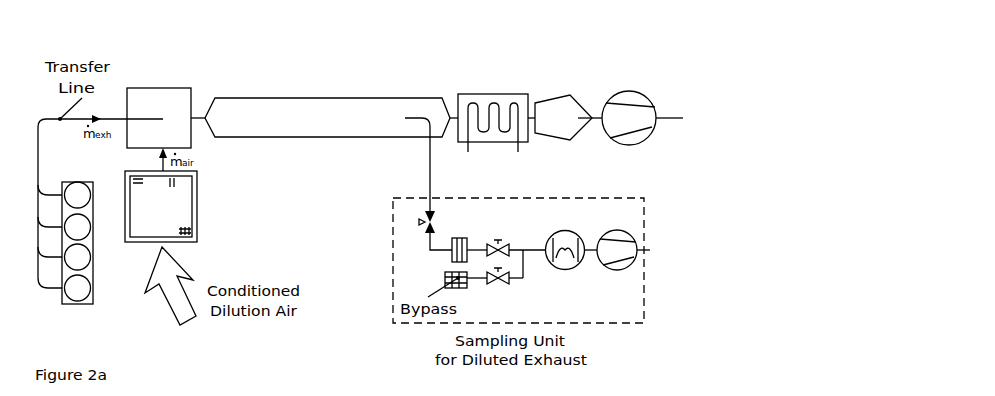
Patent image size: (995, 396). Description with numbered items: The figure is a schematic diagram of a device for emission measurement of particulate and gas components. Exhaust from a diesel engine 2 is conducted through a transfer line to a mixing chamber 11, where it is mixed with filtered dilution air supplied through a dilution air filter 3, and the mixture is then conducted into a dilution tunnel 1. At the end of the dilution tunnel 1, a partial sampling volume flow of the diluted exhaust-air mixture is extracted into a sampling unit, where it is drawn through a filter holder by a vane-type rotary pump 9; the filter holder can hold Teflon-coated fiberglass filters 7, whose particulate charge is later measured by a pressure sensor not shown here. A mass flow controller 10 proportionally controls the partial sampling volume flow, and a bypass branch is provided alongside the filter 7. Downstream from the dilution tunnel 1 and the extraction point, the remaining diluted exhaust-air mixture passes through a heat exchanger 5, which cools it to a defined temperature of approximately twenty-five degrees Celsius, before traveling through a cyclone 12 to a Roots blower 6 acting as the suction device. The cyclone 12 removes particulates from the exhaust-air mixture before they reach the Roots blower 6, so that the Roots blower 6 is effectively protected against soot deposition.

The dilution tunnel 1 is at (297, 98).
The diesel engine 2 is at (92, 300).
The dilution air filter 3 is at (194, 193).
The heat exchanger 5 is at (470, 97).
The Roots blower 6 is at (628, 91).
The filter 7 is at (462, 238).
The vane-type rotary pump 9 is at (620, 232).
The mass flow controller 10 is at (567, 268).
The mixing chamber 11 is at (188, 105).
The cyclone 12 is at (552, 102).